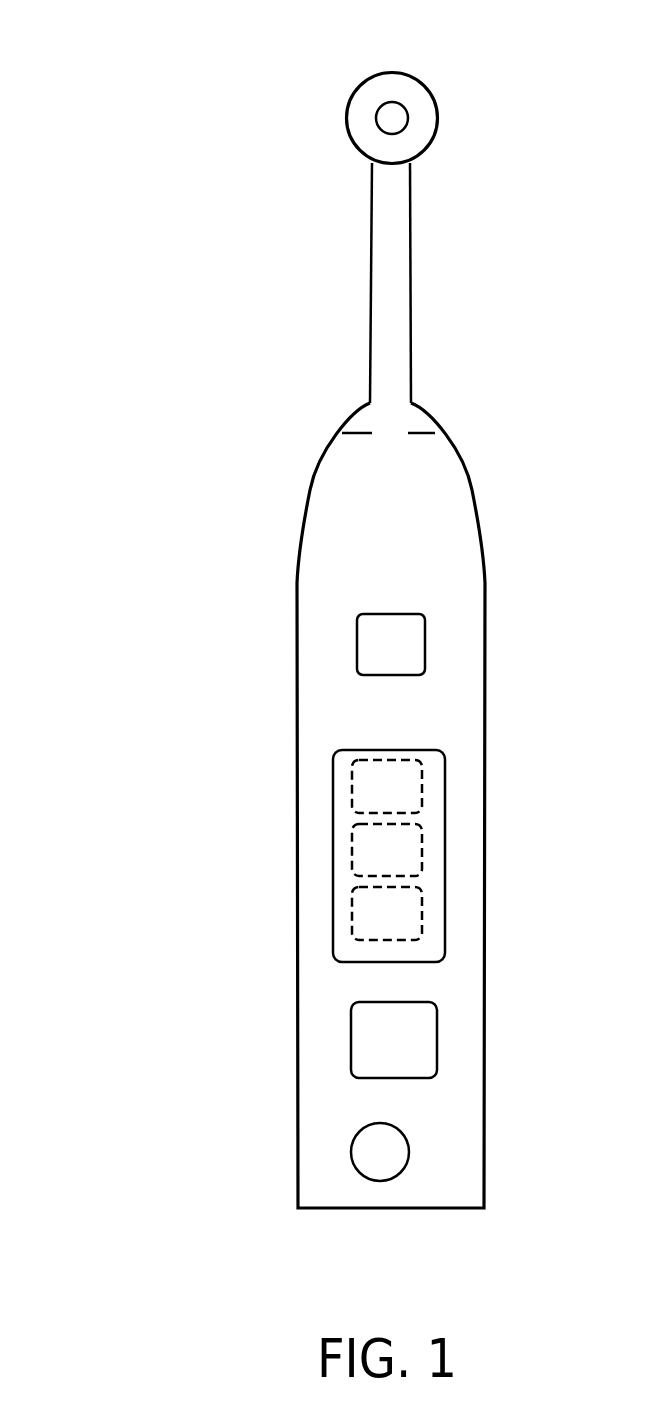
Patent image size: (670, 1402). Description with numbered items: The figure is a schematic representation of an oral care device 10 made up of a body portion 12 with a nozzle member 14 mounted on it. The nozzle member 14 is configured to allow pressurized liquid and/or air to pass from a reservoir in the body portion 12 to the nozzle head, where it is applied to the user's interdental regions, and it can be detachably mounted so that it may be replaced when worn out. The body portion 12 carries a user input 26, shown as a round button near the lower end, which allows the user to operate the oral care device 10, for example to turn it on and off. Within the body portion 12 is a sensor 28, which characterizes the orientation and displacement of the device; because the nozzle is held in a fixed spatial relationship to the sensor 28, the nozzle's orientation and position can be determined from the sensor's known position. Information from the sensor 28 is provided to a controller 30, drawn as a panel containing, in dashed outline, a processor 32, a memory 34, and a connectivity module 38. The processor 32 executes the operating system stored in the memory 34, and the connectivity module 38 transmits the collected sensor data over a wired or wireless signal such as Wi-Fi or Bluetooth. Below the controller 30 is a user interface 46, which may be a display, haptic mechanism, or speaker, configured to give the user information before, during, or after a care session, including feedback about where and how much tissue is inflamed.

The oral care device 10 is at (95, 88).
The body portion 12 is at (286, 600).
The nozzle member 14 is at (361, 270).
The user input 26 is at (351, 1153).
The sensor 28 is at (425, 642).
The controller 30 is at (345, 818).
The processor 32 is at (422, 777).
The memory 34 is at (422, 840).
The connectivity module 38 is at (422, 905).
The user interface 46 is at (420, 1038).